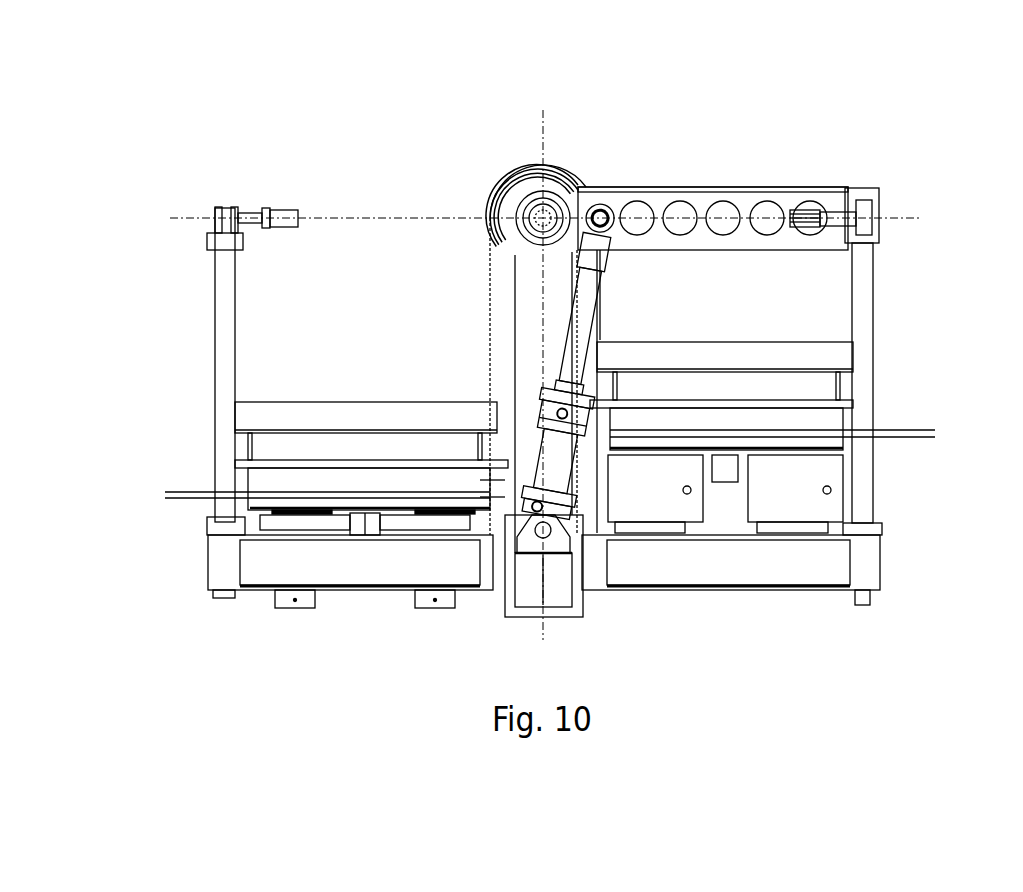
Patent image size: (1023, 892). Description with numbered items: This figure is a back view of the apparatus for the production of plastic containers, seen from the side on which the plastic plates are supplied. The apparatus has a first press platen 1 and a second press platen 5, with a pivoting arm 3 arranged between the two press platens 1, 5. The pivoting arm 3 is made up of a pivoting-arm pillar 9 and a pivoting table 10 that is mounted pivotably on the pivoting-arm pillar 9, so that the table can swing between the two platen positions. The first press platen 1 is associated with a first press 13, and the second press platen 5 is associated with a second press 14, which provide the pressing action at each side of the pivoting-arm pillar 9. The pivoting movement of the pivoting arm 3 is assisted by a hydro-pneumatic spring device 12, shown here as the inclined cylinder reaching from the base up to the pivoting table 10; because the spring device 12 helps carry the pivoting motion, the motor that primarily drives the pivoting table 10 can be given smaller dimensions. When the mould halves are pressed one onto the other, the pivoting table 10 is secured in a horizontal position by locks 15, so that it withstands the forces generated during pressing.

The first press platen 1 is at (258, 485).
The pivoting arm 3 is at (702, 203).
The second press platen 5 is at (797, 423).
The pivoting-arm pillar 9 is at (545, 306).
The pivoting table 10 is at (777, 193).
The hydro-pneumatic spring device 12 is at (560, 448).
The first press 13 is at (355, 520).
The second press 14 is at (735, 472).
The locks 15 is at (832, 218).